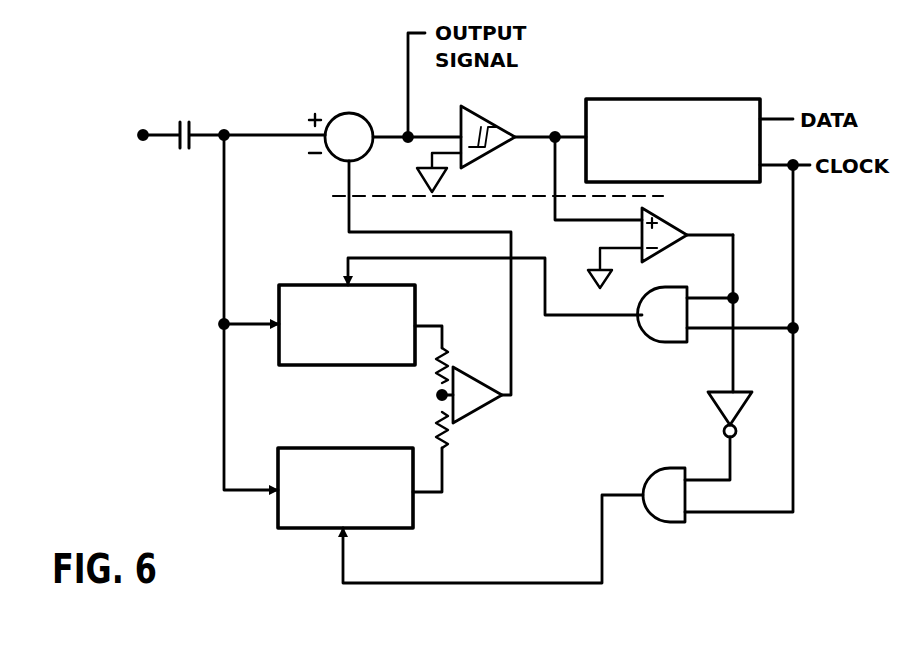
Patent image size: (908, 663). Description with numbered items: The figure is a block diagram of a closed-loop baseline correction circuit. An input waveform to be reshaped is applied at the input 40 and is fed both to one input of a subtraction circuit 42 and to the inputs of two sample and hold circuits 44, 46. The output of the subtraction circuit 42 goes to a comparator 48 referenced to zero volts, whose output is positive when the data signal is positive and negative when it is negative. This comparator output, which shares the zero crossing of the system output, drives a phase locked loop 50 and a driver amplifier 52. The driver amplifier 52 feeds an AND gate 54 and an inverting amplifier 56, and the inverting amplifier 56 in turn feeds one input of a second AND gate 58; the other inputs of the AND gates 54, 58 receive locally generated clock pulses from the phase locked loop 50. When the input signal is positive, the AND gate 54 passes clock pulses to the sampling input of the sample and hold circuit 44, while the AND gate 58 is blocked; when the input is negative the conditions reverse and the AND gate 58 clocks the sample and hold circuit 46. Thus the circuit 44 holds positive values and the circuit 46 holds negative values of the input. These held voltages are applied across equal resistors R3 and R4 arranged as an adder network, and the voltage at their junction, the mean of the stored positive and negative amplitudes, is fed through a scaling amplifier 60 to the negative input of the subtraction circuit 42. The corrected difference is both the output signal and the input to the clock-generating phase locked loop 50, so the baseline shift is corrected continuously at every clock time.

The input 40 is at (143, 135).
The subtraction circuit 42 is at (355, 114).
The sample and hold circuit 44 is at (280, 290).
The sample and hold circuit 46 is at (282, 455).
The comparator 48 is at (480, 121).
The phase locked loop 50 is at (621, 99).
The driver amplifier 52 is at (660, 210).
The AND gate 54 is at (649, 334).
The inverting amplifier 56 is at (742, 400).
The AND gate 58 is at (678, 524).
The scaling amplifier 60 is at (475, 420).
The resistor R3 is at (447, 360).
The resistor R4 is at (450, 426).